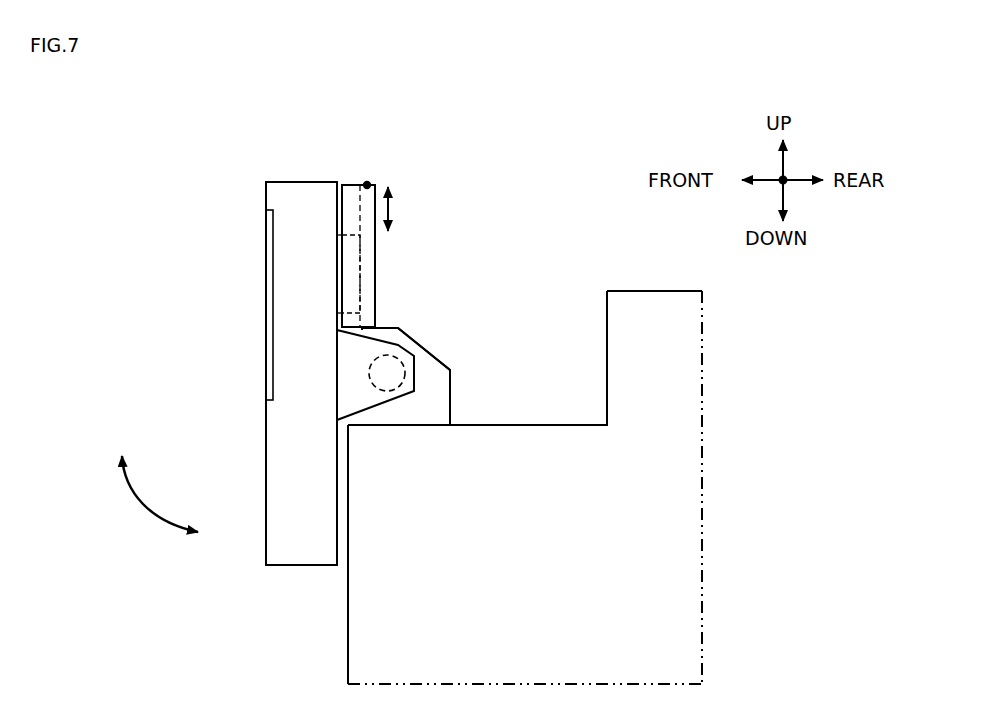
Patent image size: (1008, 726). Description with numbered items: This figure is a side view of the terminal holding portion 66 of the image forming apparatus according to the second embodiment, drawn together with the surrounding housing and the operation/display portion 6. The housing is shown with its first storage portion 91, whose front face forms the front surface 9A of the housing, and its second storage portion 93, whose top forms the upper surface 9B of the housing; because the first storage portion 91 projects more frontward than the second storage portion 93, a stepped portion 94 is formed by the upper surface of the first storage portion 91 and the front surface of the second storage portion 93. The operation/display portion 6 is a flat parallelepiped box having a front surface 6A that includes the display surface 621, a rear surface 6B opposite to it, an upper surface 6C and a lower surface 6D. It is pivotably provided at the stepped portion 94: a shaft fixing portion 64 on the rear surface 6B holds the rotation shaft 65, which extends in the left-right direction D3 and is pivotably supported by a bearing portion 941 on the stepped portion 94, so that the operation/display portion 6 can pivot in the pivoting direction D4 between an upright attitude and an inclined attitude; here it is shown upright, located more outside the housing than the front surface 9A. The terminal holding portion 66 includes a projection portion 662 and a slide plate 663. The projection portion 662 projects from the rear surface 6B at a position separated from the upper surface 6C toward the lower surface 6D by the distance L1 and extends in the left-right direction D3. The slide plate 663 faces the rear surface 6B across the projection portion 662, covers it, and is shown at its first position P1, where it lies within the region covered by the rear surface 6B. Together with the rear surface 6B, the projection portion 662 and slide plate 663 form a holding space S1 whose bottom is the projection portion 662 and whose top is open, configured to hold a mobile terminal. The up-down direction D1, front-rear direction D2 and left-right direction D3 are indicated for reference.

The operation/display portion 6 is at (255, 153).
The front surface 6A is at (266, 453).
The rear surface 6B is at (337, 525).
The upper surface 6C is at (288, 181).
The lower surface 6D is at (285, 565).
The display surface 621 is at (267, 228).
The terminal holding portion 66 is at (360, 127).
The projection portion 662 is at (355, 247).
The slide plate 663 is at (375, 302).
The shaft fixing portion 64 is at (412, 395).
The rotation shaft 65 is at (393, 388).
The stepped portion 94 is at (500, 302).
The bearing portion 941 is at (452, 393).
The second storage portion 93 is at (598, 340).
The front surface 9A is at (348, 655).
The upper surface 9B is at (658, 291).
The first storage portion 91 is at (338, 605).
The holding space S1 is at (350, 178).
The first position P1 is at (368, 184).
The distance L1 is at (390, 210).
The up-down direction D1 is at (780, 162).
The front-rear direction D2 is at (802, 173).
The left-right direction D3 is at (785, 183).
The pivoting direction D4 is at (143, 512).